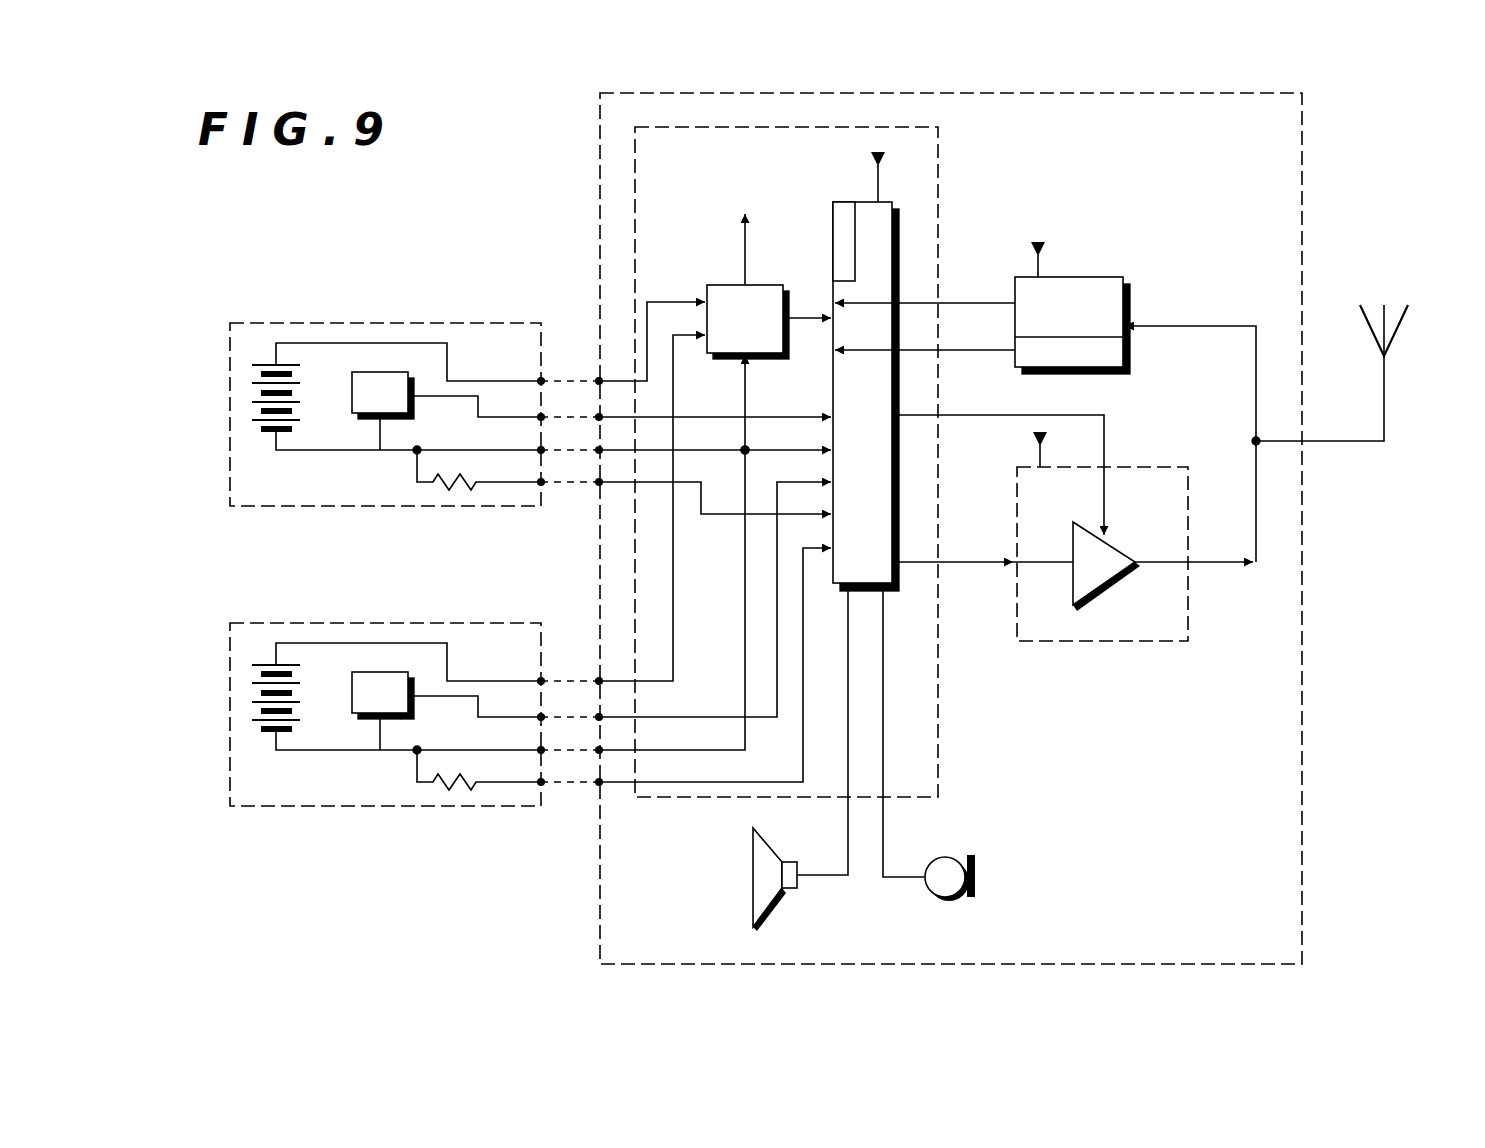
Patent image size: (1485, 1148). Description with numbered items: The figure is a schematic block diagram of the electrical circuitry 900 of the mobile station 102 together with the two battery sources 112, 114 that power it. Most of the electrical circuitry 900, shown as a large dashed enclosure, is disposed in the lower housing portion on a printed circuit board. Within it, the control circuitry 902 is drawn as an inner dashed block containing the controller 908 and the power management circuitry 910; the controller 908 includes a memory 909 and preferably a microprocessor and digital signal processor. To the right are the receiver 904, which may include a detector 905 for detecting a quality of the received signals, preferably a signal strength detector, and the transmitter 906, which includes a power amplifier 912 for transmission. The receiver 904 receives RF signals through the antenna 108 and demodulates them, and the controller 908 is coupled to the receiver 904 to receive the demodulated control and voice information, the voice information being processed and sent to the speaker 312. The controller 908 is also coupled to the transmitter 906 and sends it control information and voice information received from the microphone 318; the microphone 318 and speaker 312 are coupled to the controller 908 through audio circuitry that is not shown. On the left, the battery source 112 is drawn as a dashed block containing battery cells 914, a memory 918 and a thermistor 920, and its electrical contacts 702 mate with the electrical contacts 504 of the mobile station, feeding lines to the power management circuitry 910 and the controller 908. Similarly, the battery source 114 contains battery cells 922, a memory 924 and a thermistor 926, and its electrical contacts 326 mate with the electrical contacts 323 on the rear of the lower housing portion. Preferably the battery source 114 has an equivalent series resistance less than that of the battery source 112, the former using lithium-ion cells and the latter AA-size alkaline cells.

The mobile station 102 is at (1378, 817).
The antenna 108 is at (1384, 385).
The battery source 112 is at (233, 323).
The battery source 114 is at (233, 623).
The speaker 312 is at (770, 904).
The microphone 318 is at (936, 894).
The electrical contacts 323 is at (587, 672).
The electrical contacts 326 is at (550, 798).
The electrical contacts 504 is at (586, 492).
The electrical contacts 702 is at (553, 370).
The electrical circuitry 900 is at (1304, 144).
The control circuitry 902 is at (939, 132).
The receiver 904 is at (1112, 277).
The detector 905 is at (1123, 357).
The transmitter 906 is at (1170, 467).
The controller 908 is at (889, 222).
The memory 909 is at (843, 202).
The power management circuitry 910 is at (717, 285).
The power amplifier 912 is at (1102, 585).
The battery cells 914 is at (269, 432).
The memory 918 is at (363, 372).
The thermistor 920 is at (461, 491).
The battery cells 922 is at (269, 732).
The memory 924 is at (363, 672).
The thermistor 926 is at (461, 791).